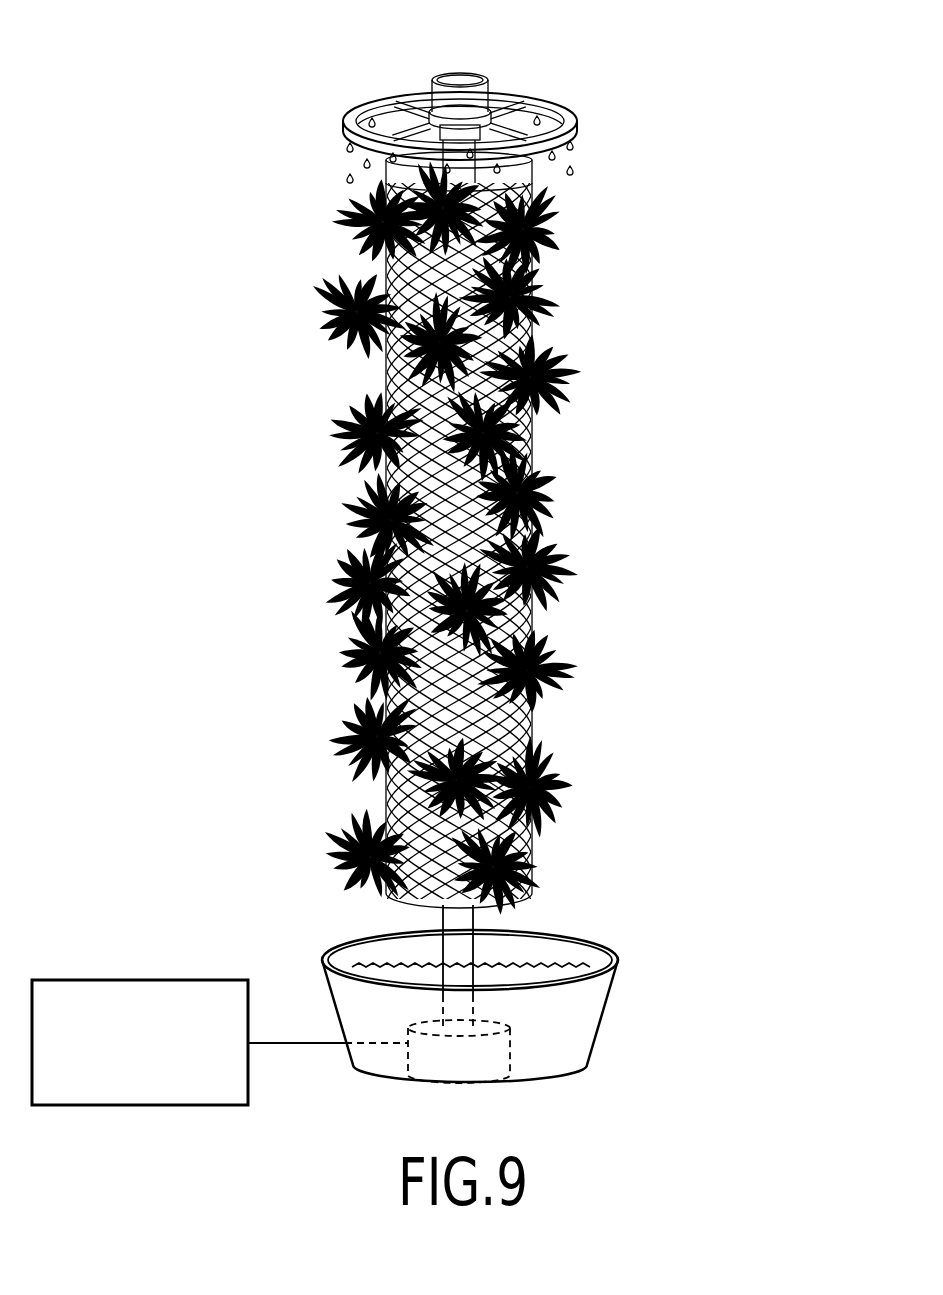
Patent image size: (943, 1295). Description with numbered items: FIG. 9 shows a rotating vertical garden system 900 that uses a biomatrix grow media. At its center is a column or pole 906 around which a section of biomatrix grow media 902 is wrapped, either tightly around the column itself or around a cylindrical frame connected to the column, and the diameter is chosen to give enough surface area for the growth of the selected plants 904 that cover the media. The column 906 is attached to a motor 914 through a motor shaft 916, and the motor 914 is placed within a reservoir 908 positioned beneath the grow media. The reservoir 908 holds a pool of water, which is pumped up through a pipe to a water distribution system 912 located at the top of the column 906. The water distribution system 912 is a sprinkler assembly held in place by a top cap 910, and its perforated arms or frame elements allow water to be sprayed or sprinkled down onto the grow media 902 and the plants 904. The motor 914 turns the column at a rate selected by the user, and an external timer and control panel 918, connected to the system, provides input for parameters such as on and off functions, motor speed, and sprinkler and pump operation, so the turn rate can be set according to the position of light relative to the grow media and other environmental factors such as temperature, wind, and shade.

The hydroponic growing system 900 is at (199, 48).
The biomatrix grow media 902 is at (535, 433).
The plants 904 is at (547, 236).
The central column or pole 906 is at (475, 952).
The reservoir 908 is at (602, 1015).
The top cap 910 is at (459, 76).
The water distribution system 912 is at (568, 108).
The motor 914 is at (513, 1053).
The motor shaft 916 is at (473, 1002).
The timer and control panel 918 is at (127, 980).